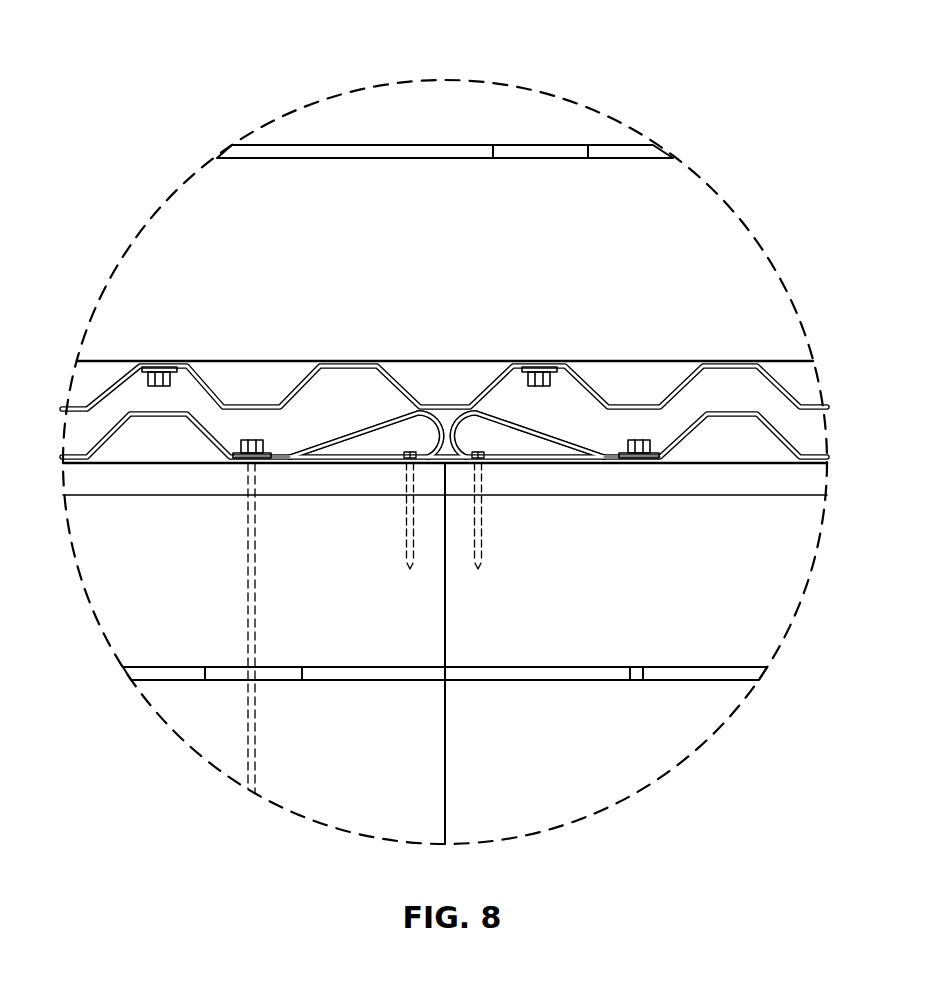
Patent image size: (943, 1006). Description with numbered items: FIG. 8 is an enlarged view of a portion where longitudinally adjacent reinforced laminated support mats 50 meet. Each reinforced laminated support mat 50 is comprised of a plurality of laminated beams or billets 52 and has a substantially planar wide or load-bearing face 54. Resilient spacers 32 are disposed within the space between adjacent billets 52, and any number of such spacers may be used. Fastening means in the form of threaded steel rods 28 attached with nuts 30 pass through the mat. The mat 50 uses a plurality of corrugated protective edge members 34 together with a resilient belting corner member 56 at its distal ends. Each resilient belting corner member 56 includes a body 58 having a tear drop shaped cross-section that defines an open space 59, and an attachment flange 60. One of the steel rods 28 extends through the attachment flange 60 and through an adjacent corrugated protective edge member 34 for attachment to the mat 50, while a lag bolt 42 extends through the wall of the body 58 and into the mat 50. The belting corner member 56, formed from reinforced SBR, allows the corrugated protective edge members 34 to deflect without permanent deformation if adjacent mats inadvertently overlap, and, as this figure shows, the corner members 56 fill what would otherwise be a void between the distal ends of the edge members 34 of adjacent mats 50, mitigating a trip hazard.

The reinforced laminated support mat 50 is at (180, 38).
The laminated beams or billets 52 is at (433, 103).
The resilient spacers 32 is at (547, 155).
The load-bearing face 54 is at (592, 214).
The corrugated protective edge members 34 is at (190, 365).
The nuts 30 is at (247, 437).
The resilient belting corner member 56 is at (338, 430).
The body 58 is at (402, 410).
The open space 59 is at (427, 428).
The attachment flange 60 is at (267, 467).
The lag bolt 42 is at (406, 518).
The threaded steel rods 28 is at (257, 600).